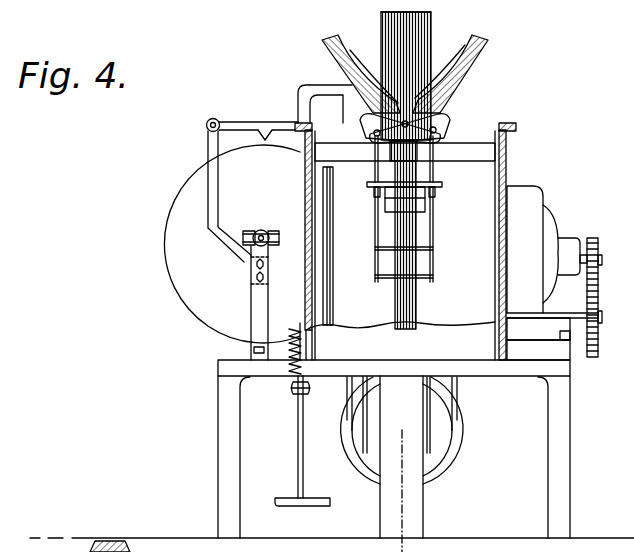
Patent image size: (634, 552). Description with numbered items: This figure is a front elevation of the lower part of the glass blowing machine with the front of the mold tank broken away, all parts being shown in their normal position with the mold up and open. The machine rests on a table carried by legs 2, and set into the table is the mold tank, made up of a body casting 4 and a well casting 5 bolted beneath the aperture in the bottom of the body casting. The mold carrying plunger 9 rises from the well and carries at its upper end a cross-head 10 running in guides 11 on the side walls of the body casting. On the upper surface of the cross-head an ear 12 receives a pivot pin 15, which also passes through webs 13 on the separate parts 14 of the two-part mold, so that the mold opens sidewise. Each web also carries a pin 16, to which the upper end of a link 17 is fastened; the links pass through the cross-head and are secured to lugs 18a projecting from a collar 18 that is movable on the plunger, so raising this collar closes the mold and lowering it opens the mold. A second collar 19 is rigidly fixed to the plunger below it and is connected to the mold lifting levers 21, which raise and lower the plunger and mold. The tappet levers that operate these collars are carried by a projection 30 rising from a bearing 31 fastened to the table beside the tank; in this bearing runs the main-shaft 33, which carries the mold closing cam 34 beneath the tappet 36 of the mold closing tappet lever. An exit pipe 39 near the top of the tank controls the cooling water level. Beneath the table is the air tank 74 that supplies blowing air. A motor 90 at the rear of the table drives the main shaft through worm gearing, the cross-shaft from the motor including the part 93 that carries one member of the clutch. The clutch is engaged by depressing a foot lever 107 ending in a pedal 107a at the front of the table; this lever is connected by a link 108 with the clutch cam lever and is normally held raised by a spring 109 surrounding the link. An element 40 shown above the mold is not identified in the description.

The legs 2 is at (410, 485).
The body casting 4 is at (400, 337).
The well casting 5 is at (431, 12).
The mold carrying plunger 9 is at (410, 262).
The cross-head 10 is at (493, 150).
The guides 11 is at (313, 178).
The ear 12 is at (419, 157).
The webs 13 is at (425, 100).
The separate parts of two-part mold 14 is at (322, 58).
The pivot pin 15 is at (455, 125).
The pin 16 is at (372, 130).
The link 17 is at (434, 175).
The collar 18 is at (392, 192).
The lugs 18a is at (437, 186).
The second collar 19 is at (393, 208).
The mold lifting levers 21 is at (432, 240).
The projection 30 is at (232, 231).
The bearing 31 is at (252, 293).
The main-shaft 33 is at (266, 234).
The mold closing cam 34 is at (259, 225).
The tappet 36 is at (265, 141).
The exit pipe 39 is at (330, 247).
The spindle 40 is at (381, 32).
The air tank 74 is at (445, 440).
The motor 90 is at (528, 212).
The part of cross-shaft 93 is at (576, 322).
The foot lever 107 is at (297, 420).
The pedal 107a is at (312, 502).
The link 108 is at (289, 342).
The spring 109 is at (293, 356).